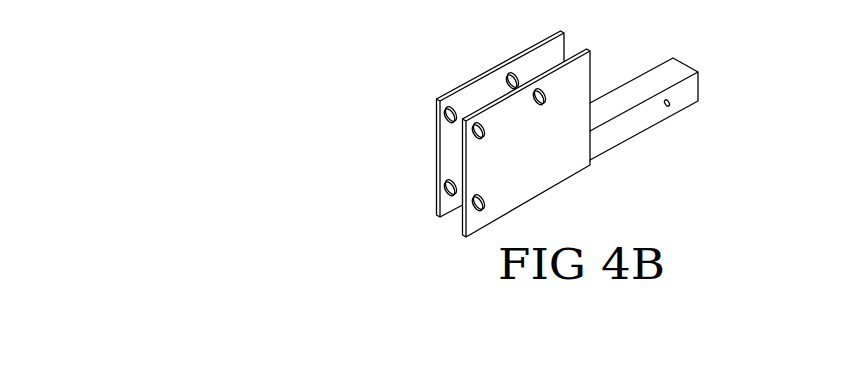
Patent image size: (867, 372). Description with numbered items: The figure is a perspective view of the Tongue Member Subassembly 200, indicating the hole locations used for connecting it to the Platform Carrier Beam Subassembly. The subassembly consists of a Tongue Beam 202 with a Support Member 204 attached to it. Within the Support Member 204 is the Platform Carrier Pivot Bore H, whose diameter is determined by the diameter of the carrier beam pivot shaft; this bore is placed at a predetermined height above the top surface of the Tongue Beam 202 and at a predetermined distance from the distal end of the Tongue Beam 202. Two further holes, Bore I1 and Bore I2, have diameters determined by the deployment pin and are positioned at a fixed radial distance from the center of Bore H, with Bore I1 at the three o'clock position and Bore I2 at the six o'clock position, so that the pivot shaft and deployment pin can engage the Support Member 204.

The Tongue Member Subassembly 200 is at (268, 123).
The Tongue Beam 202 is at (652, 83).
The Support Member 204 is at (515, 118).
The Platform Carrier Pivot Bore H is at (447, 110).
The Bore I1 is at (510, 76).
The Bore I2 is at (448, 183).